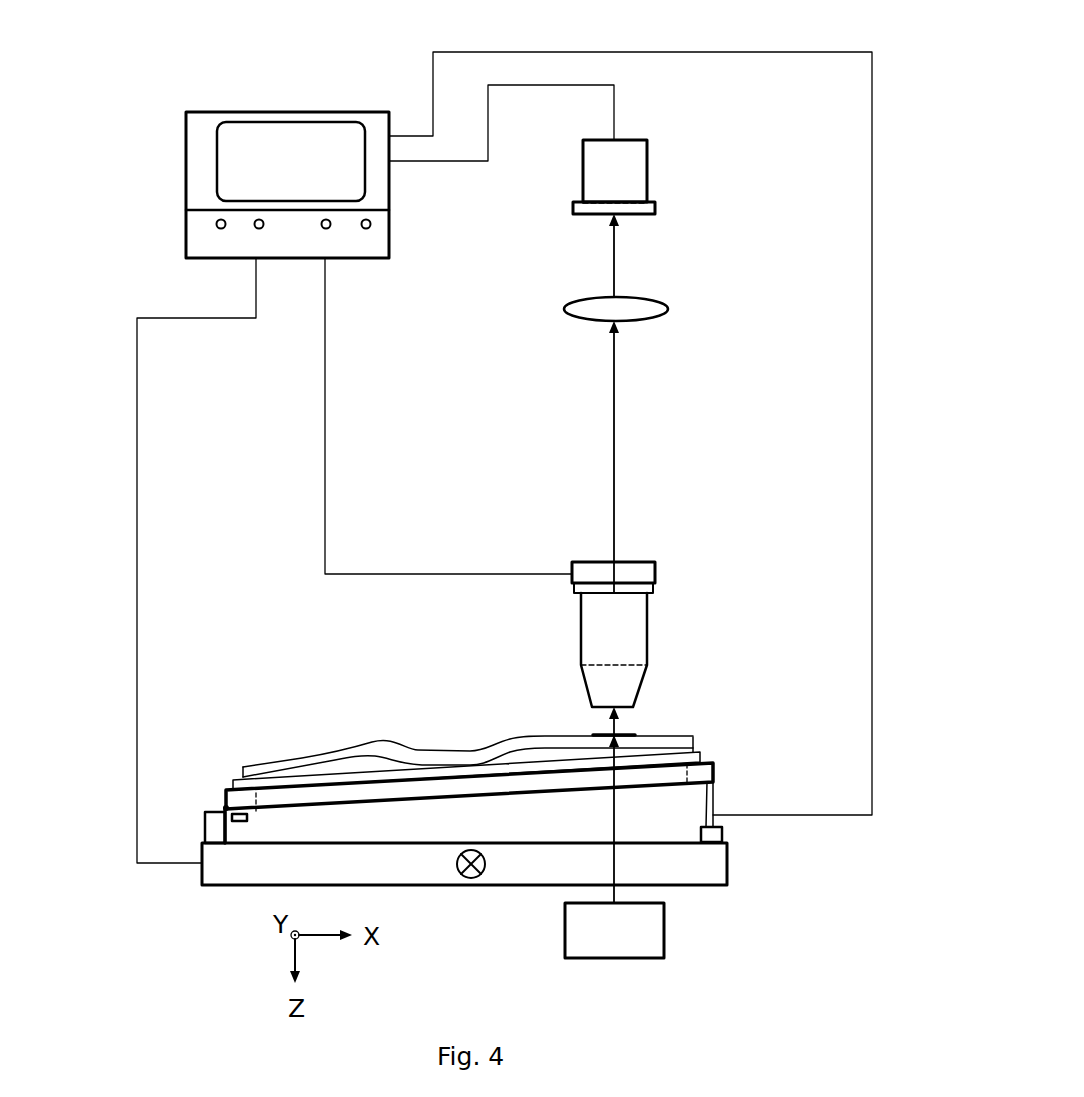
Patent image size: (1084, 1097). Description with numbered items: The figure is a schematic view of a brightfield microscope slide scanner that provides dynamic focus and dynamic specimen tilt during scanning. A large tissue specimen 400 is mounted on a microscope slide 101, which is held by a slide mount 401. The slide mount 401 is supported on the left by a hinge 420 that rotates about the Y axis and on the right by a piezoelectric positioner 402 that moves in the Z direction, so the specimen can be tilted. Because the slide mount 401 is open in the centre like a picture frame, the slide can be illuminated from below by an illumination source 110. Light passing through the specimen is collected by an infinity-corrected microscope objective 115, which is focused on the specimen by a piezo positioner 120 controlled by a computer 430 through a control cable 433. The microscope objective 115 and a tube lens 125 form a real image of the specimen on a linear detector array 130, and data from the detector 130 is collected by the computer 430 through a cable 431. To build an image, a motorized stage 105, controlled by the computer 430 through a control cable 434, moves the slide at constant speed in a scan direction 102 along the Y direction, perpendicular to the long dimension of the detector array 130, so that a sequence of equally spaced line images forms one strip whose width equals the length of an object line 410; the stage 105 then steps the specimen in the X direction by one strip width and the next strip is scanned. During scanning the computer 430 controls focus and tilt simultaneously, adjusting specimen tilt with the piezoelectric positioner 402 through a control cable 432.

The microscope slide 101 is at (712, 754).
The scan direction 102 is at (471, 878).
The motorized stage 105 is at (727, 857).
The illumination source 110 is at (664, 923).
The infinity-corrected microscope objective 115 is at (648, 647).
The piezo positioner 120 is at (657, 572).
The tube lens 125 is at (670, 308).
The linear detector array 130 is at (648, 173).
The tissue specimen 400 is at (666, 734).
The slide mount 401 is at (716, 765).
The piezoelectric positioner 402 is at (716, 788).
The object line 410 is at (627, 733).
The hinge 420 is at (226, 806).
The computer 430 is at (290, 112).
The cable 431 is at (422, 163).
The control cable 432 is at (487, 52).
The control cable 433 is at (325, 405).
The control cable 434 is at (137, 578).